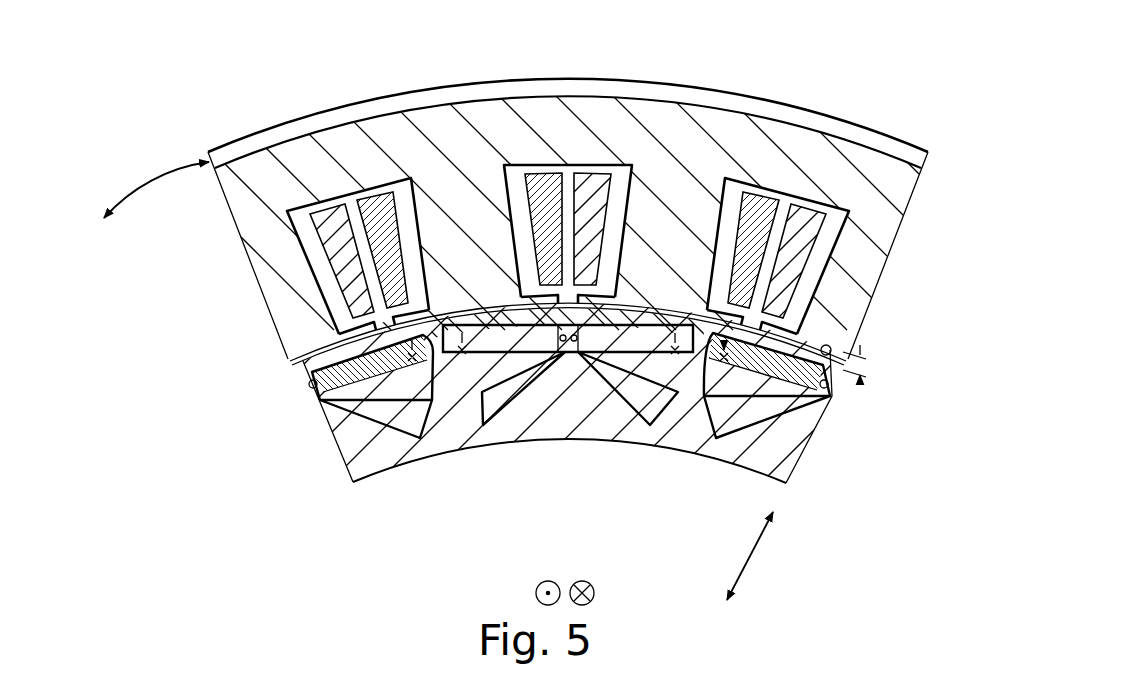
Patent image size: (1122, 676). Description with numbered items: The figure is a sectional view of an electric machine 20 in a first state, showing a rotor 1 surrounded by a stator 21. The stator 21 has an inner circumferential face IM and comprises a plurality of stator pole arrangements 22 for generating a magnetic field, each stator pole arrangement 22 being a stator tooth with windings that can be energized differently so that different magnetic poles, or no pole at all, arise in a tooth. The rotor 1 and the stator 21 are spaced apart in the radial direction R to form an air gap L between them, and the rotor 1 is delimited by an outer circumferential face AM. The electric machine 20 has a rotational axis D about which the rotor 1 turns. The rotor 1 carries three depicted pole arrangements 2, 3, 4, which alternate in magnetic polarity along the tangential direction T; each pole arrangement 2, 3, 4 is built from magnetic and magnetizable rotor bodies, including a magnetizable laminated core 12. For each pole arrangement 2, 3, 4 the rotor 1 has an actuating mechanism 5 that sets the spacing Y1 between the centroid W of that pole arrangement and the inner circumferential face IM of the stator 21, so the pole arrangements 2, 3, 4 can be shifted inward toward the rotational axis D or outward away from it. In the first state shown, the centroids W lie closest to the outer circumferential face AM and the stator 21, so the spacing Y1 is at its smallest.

The electric machine 20 is at (905, 85).
The stator 21 is at (625, 130).
The stator pole arrangement 22 is at (453, 160).
The actuating mechanism 5 is at (580, 287).
The rotor 1 is at (331, 468).
The pole arrangement 2 is at (307, 426).
The pole arrangement 3 is at (555, 404).
The pole arrangement 4 is at (787, 408).
The magnetizable laminated core 12 is at (398, 432).
The inner circumferential face IM is at (605, 306).
The spacing Y1 is at (300, 389).
The centroid W is at (425, 402).
The outer circumferential face AM is at (868, 364).
The air gap L is at (860, 378).
The tangential direction T is at (152, 180).
The radial direction R is at (748, 556).
The rotational axis D is at (536, 594).